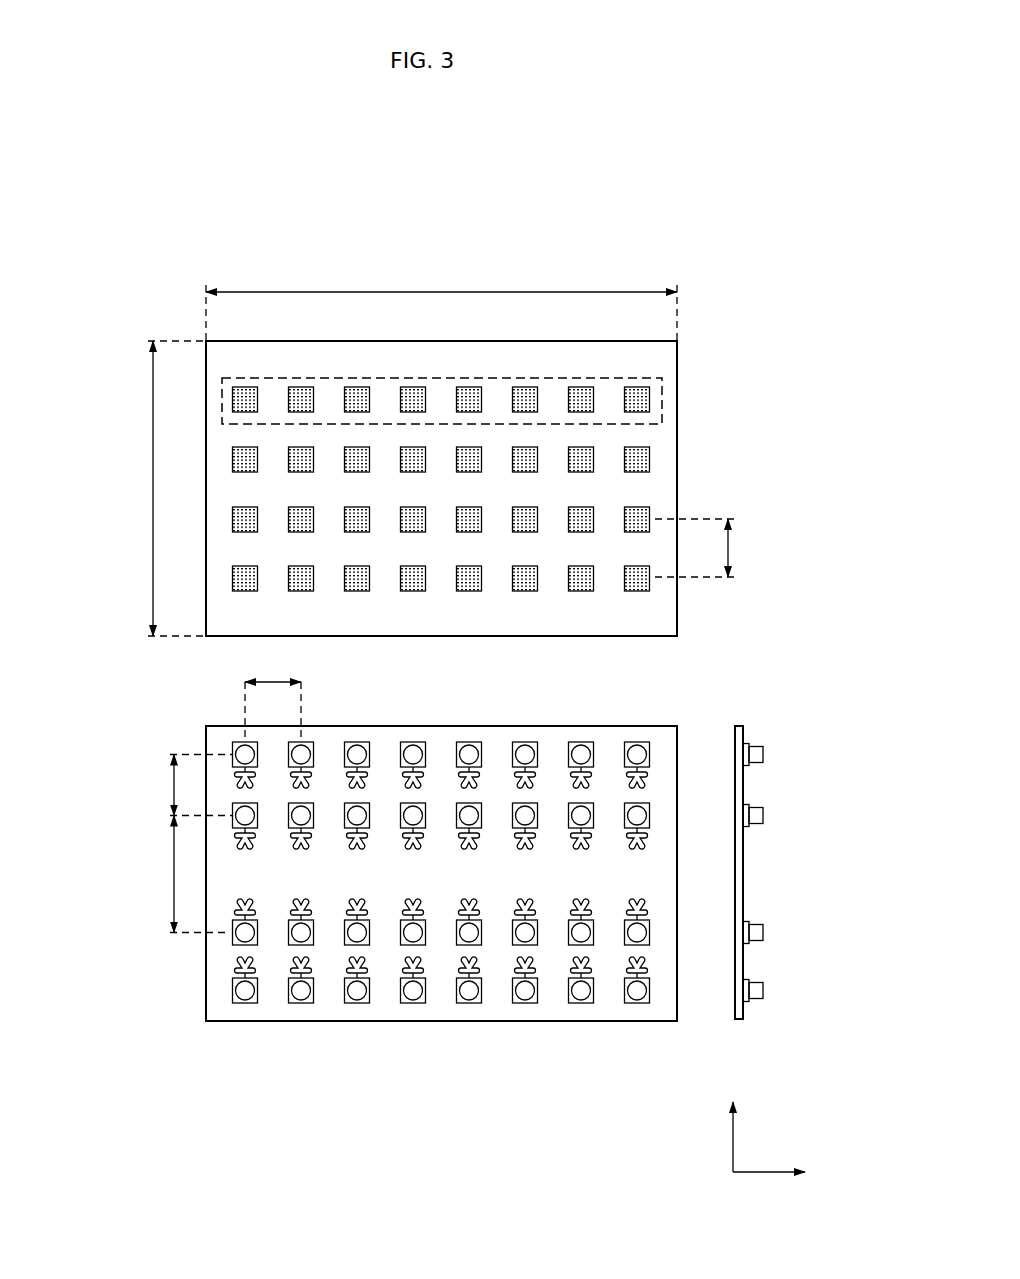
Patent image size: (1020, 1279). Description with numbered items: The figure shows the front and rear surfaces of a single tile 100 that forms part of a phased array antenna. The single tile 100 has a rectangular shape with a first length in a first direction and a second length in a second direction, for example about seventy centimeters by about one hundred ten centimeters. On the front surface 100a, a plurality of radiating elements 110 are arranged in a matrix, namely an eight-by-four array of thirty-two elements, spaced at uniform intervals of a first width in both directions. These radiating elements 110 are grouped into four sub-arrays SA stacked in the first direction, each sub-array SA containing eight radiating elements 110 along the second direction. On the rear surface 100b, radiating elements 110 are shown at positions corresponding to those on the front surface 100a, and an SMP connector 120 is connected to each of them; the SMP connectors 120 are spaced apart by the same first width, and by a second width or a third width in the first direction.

The single tile 100 is at (800, 237).
The front surface 100a is at (228, 364).
The rear surface 100b is at (218, 1001).
The radiating element 110 is at (651, 400).
The SMP connector 120 is at (471, 750).
The sub-array SA is at (612, 378).